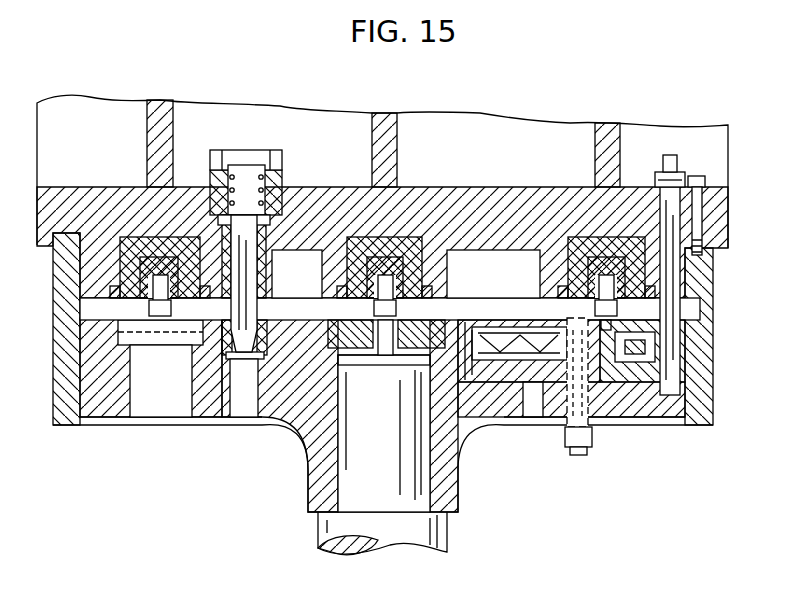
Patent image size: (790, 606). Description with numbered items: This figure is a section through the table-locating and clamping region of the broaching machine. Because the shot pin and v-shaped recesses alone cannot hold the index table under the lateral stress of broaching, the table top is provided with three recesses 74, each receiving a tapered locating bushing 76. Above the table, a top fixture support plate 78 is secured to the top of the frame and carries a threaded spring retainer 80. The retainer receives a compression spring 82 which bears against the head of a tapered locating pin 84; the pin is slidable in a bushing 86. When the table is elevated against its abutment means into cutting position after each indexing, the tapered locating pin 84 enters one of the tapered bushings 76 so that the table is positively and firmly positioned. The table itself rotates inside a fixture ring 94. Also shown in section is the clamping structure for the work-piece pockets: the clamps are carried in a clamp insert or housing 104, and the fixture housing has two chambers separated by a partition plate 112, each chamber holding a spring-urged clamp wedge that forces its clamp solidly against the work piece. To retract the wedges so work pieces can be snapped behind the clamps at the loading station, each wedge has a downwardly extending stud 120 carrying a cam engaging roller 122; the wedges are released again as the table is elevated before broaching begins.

The recess 74 is at (262, 358).
The tapered locating bushing 76 is at (217, 355).
The top fixture support plate 78 is at (210, 182).
The threaded spring retainer 80 is at (282, 152).
The compression spring 82 is at (250, 180).
The tapered locating pin 84 is at (243, 360).
The bushing 86 is at (265, 263).
The fixture ring 94 is at (712, 276).
The clamp insert 104 is at (665, 366).
The partition plate 112 is at (512, 353).
The stud 120 is at (580, 455).
The cam engaging roller 122 is at (594, 435).